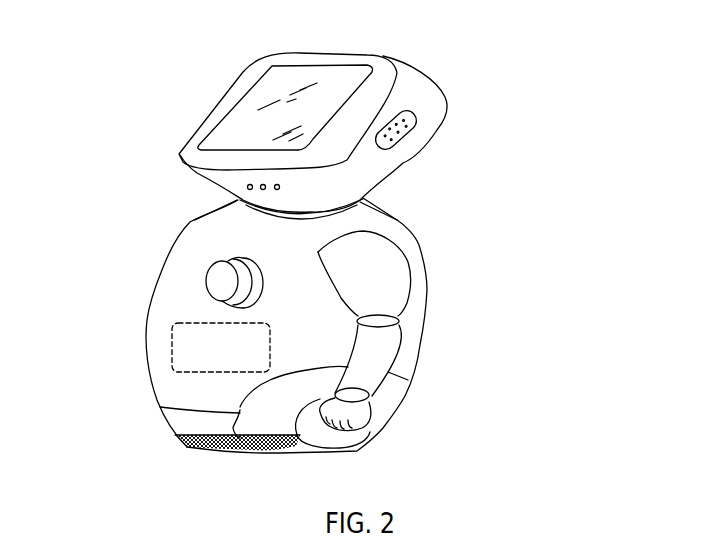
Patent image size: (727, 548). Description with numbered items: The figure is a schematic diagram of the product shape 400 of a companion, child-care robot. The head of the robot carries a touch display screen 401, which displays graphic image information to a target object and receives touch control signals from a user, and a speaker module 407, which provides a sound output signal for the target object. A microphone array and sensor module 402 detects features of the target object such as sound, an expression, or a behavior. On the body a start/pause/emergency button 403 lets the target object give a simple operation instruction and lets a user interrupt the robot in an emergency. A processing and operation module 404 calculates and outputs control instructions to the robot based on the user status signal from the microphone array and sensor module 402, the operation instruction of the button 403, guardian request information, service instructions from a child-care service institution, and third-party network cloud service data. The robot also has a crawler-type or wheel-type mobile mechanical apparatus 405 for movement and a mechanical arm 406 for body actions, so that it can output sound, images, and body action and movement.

The product shape 400 is at (540, 58).
The touch display screen 401 is at (278, 83).
The microphone array and sensor module 402 is at (227, 187).
The start/pause/emergency button 403 is at (224, 280).
The processing and operation module 404 is at (207, 353).
The crawler-type/wheel-type mobile mechanical apparatus 405 is at (187, 444).
The mechanical arm 406 is at (385, 277).
The speaker module 407 is at (397, 137).